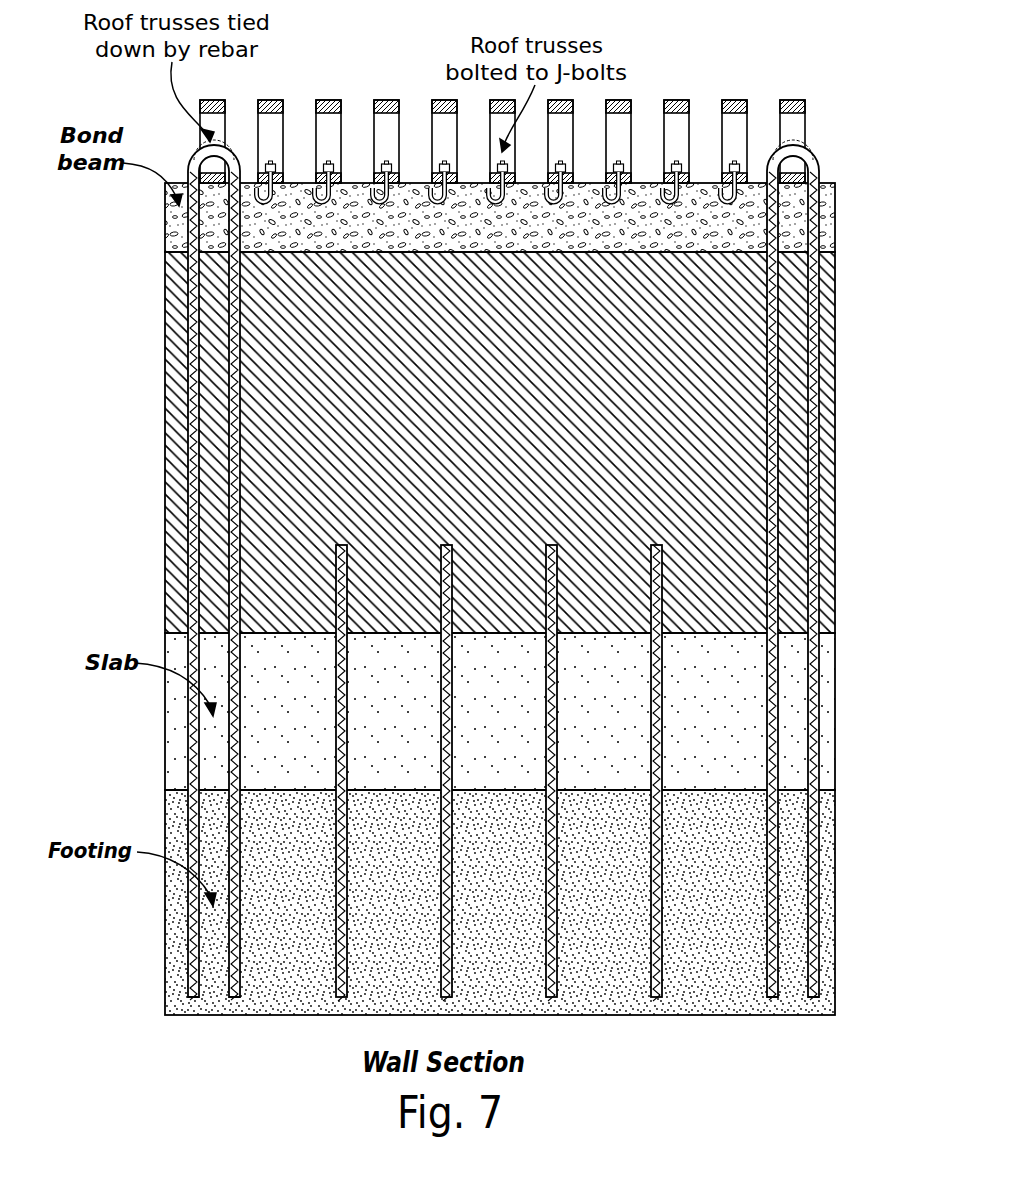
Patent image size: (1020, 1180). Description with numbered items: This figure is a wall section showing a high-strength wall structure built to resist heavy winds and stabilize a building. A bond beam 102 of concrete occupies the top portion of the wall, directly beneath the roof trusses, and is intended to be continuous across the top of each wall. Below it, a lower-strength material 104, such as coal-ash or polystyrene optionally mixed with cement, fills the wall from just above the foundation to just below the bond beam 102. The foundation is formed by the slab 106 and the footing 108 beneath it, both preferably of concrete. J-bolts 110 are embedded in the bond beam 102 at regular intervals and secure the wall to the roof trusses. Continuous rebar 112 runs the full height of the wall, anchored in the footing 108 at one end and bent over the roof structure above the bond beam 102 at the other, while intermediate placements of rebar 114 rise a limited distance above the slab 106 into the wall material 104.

The bond beam 102 is at (178, 232).
The material 104 is at (178, 420).
The slab 106 is at (178, 770).
The footing 108 is at (178, 945).
The J-bolts 110 is at (335, 193).
The rebar 112 is at (238, 340).
The intermediate placements of rebar 114 is at (348, 553).